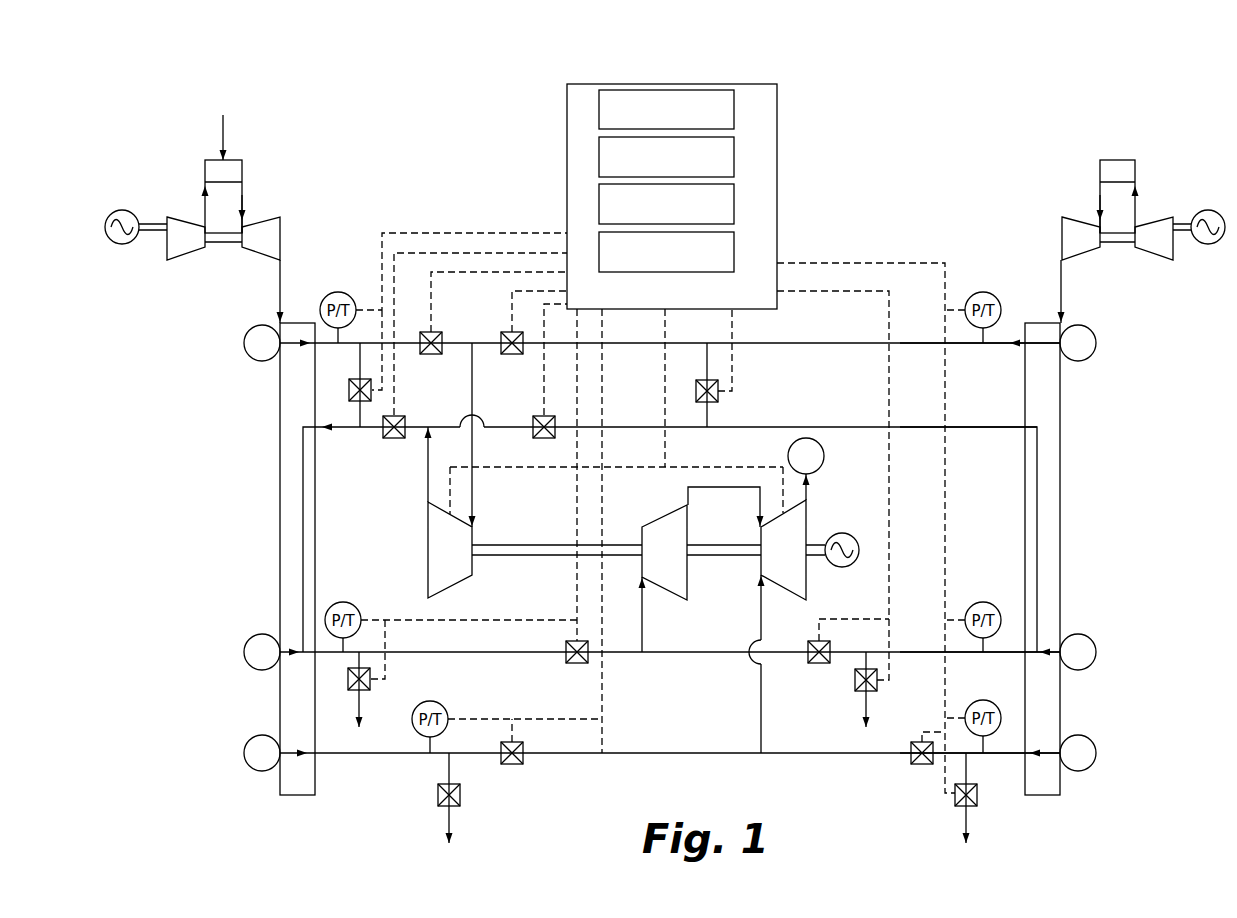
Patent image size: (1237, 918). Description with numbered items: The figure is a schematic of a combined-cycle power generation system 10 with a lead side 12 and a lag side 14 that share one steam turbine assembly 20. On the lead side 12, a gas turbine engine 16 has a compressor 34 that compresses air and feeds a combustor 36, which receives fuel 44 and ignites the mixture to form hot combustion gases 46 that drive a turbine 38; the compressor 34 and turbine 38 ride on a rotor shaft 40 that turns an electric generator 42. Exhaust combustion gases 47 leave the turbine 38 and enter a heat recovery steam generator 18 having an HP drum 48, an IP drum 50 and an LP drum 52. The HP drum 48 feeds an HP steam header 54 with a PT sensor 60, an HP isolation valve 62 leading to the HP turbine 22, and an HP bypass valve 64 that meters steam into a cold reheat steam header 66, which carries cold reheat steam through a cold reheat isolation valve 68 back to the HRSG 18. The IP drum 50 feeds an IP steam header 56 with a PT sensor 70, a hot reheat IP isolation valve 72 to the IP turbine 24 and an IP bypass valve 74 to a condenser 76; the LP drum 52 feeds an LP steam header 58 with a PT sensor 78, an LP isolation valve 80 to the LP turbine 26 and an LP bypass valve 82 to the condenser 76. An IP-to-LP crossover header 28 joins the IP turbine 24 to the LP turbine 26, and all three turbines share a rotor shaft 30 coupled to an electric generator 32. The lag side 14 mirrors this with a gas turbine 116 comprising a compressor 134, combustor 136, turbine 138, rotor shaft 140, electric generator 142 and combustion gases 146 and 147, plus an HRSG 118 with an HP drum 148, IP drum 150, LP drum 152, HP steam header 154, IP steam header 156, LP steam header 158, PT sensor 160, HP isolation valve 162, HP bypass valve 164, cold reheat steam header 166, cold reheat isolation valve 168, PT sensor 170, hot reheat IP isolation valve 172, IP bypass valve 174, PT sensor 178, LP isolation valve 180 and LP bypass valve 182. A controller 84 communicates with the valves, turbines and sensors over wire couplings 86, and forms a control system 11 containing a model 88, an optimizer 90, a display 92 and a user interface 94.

The combined-cycle power generation system 10 is at (148, 113).
The control system 11 is at (545, 165).
The lead side 12 is at (388, 170).
The lag side 14 is at (1010, 164).
The gas turbine engine 16 is at (143, 170).
The heat recovery steam generator 18 is at (185, 483).
The steam turbine assembly 20 is at (530, 530).
The high pressure turbine 22 is at (427, 556).
The intermediate pressure turbine 24 is at (652, 518).
The low pressure turbine 26 is at (762, 538).
The IP-to-LP crossover header 28 is at (726, 488).
The rotor shaft 30 is at (518, 556).
The electric generator 32 is at (845, 534).
The compressor 34 is at (165, 247).
The combustor 36 is at (205, 170).
The turbine 38 is at (284, 228).
The rotor shaft 40 is at (220, 245).
The electric generator 42 is at (111, 211).
The fuel 44 is at (225, 130).
The hot combustion gases 46 is at (244, 195).
The combustion gases 47 is at (283, 281).
The HP drum 48 is at (248, 355).
The IP drum 50 is at (248, 663).
The LP drum 52 is at (248, 763).
The HP steam header 54 is at (350, 345).
The IP steam header 56 is at (440, 655).
The LP steam header 58 is at (410, 758).
The pressure and temperature sensor 60 is at (346, 292).
The HP isolation valve 62 is at (437, 354).
The HP bypass valve 64 is at (349, 395).
The cold reheat steam header 66 is at (348, 429).
The cold reheat isolation valve 68 is at (392, 438).
The pressure and temperature sensor 70 is at (344, 602).
The hot reheat IP isolation valve 72 is at (570, 663).
The IP bypass valve 74 is at (350, 690).
The condenser 76 is at (824, 453).
The pressure and temperature sensor 78 is at (444, 705).
The LP isolation valve 80 is at (518, 765).
The LP bypass valve 82 is at (438, 808).
The controller 84 is at (672, 196).
The wire couplings 86 is at (452, 253).
The model 88 is at (666, 109).
The optimizer 90 is at (666, 157).
The display 92 is at (666, 204).
The user interface 94 is at (666, 252).
The gas turbine 116 is at (1170, 160).
The heat recovery steam generator 118 is at (1093, 465).
The compressor 134 is at (1160, 218).
The combustor 136 is at (1105, 160).
The turbine 138 is at (1061, 244).
The rotor shaft 140 is at (1120, 246).
The electric generator 142 is at (1200, 246).
The combustion gases 146 is at (1099, 195).
The combustion gases 147 is at (1063, 281).
The HP drum 148 is at (1092, 352).
The IP drum 150 is at (1092, 644).
The LP drum 152 is at (1092, 742).
The HP steam header 154 is at (843, 341).
The IP steam header 156 is at (913, 650).
The LP steam header 158 is at (984, 760).
The PT sensor 160 is at (991, 292).
The HP isolation valve 162 is at (507, 354).
The HP bypass valve 164 is at (718, 402).
The cold reheat steam header 166 is at (920, 426).
The cold reheat isolation valve 168 is at (535, 436).
The PT sensor 170 is at (984, 602).
The hot reheat IP isolation valve 172 is at (812, 663).
The IP bypass valve 174 is at (878, 686).
The PT sensor 178 is at (988, 700).
The LP isolation valve 180 is at (920, 765).
The LP bypass valve 182 is at (976, 808).